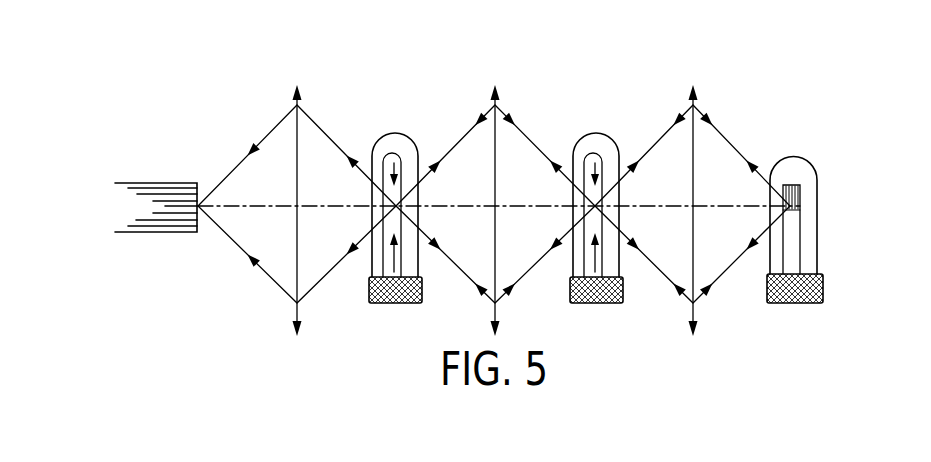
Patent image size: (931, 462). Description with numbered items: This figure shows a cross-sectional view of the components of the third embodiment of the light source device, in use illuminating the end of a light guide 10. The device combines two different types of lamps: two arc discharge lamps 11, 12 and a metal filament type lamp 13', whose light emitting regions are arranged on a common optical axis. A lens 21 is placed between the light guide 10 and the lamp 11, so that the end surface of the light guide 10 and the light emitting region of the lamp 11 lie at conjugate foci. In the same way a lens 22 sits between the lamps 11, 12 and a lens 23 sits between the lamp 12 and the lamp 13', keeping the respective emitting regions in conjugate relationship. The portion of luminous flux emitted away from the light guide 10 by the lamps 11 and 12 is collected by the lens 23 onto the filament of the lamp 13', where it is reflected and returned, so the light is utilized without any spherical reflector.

The light guide 10 is at (122, 196).
The lens 21 is at (296, 92).
The lens 22 is at (497, 91).
The lens 23 is at (695, 91).
The lamp 11 is at (396, 140).
The lamp 12 is at (591, 140).
The metal filament type lamp 13' is at (795, 202).